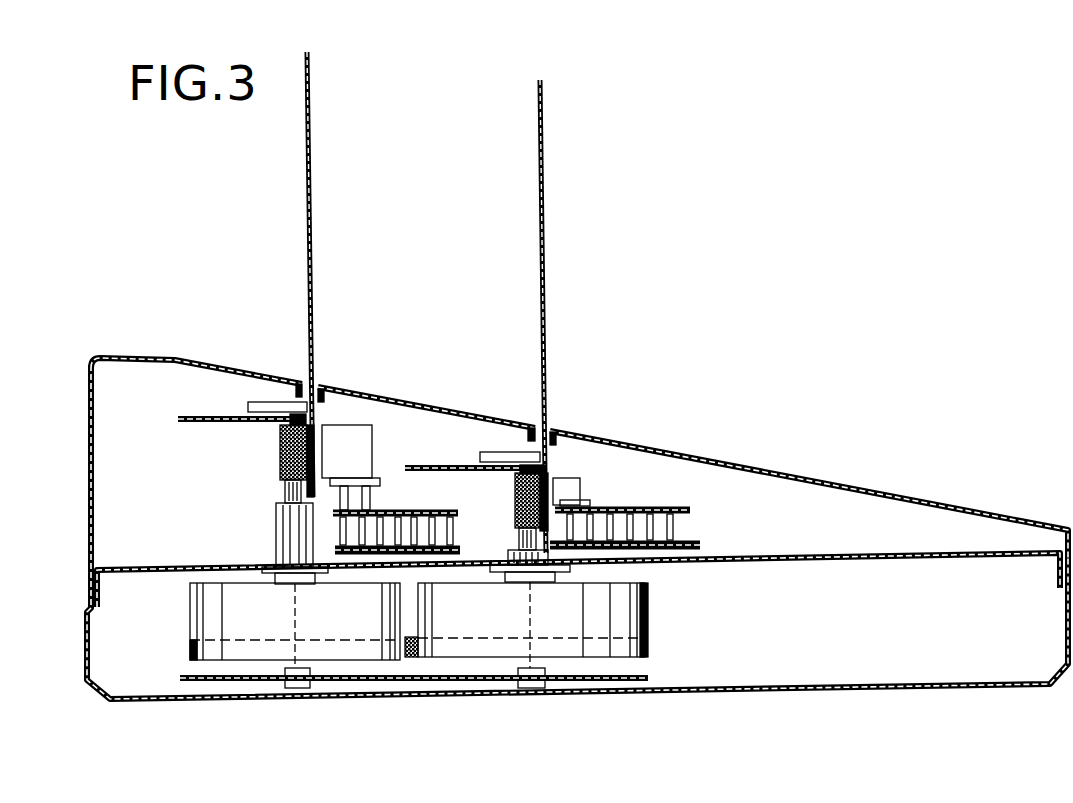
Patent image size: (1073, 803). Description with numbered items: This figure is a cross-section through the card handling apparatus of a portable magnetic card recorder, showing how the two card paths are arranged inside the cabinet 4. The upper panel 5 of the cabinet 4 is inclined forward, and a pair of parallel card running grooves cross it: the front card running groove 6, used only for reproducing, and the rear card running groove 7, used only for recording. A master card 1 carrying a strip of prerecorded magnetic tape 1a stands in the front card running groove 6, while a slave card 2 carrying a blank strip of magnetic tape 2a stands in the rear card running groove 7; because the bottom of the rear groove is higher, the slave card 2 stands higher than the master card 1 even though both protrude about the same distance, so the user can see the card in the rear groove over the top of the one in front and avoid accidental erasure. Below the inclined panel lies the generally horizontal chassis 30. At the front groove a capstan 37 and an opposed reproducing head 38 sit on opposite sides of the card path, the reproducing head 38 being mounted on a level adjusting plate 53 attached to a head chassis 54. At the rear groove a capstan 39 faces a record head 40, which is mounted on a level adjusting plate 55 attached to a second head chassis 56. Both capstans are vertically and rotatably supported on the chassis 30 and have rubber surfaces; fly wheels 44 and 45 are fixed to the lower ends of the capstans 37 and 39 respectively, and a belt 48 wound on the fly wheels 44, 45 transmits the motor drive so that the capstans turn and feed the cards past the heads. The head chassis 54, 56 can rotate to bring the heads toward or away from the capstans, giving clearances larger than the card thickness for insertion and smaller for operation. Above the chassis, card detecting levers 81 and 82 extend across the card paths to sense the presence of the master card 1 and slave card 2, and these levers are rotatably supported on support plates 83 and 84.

The master card 1 is at (547, 172).
The slave card 2 is at (313, 178).
The magnetic tape 1a is at (560, 482).
The magnetic tape 2a is at (318, 458).
The cabinet 4 is at (979, 506).
The upper panel 5 is at (846, 490).
The front card running groove 6 is at (536, 430).
The rear card running groove 7 is at (304, 384).
The chassis 30 is at (838, 560).
The capstan 37 is at (516, 522).
The reproducing head 38 is at (560, 485).
The capstan 39 is at (280, 455).
The record head 40 is at (360, 428).
The fly wheel 44 is at (575, 650).
The fly wheel 45 is at (368, 655).
The belt 48 is at (650, 640).
The level adjusting plate 53 is at (636, 510).
The head chassis 54 is at (700, 546).
The level adjusting plate 55 is at (396, 515).
The second head chassis 56 is at (462, 542).
The card detecting lever 81 is at (498, 452).
The card detecting lever 82 is at (262, 406).
The support plate 83 is at (442, 460).
The support plate 84 is at (190, 417).